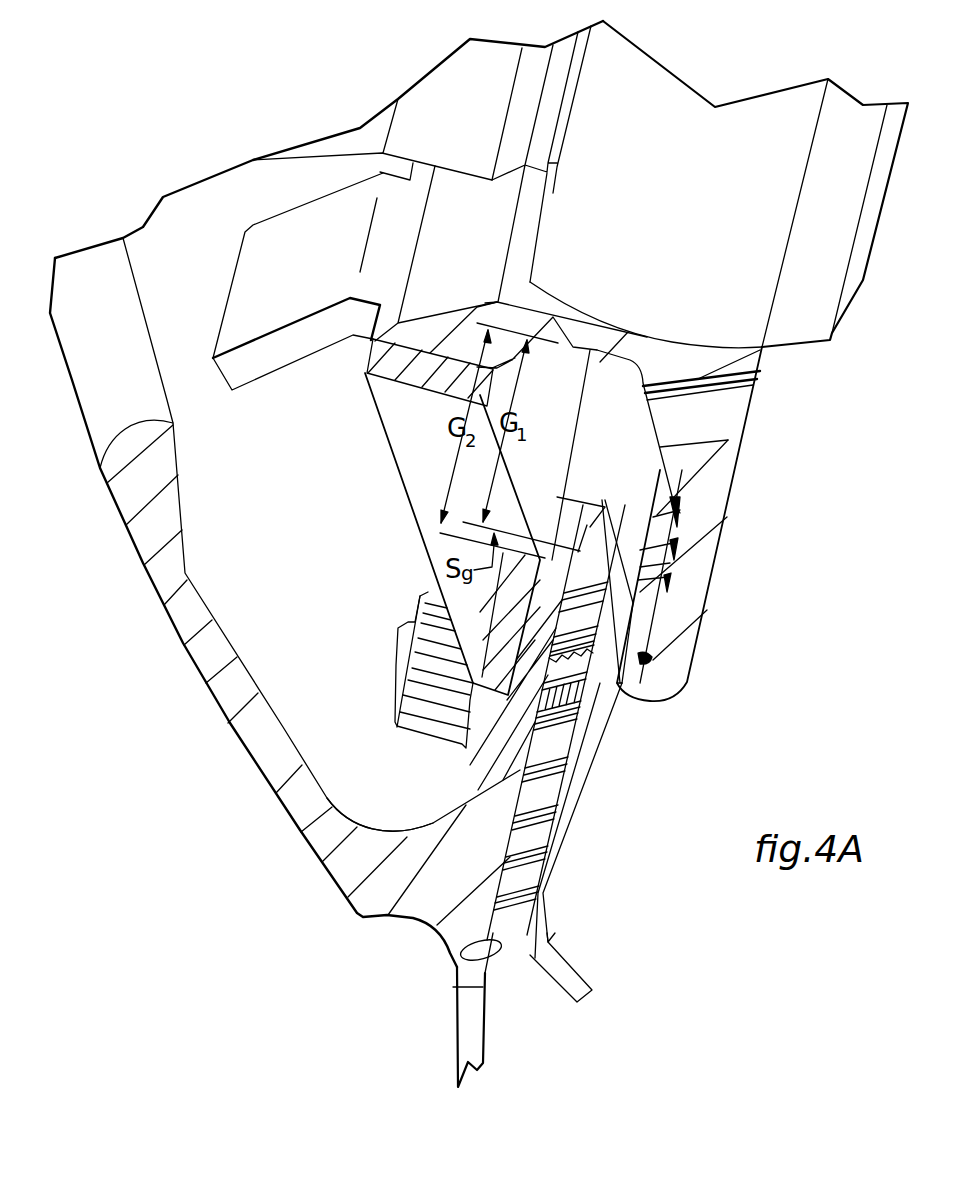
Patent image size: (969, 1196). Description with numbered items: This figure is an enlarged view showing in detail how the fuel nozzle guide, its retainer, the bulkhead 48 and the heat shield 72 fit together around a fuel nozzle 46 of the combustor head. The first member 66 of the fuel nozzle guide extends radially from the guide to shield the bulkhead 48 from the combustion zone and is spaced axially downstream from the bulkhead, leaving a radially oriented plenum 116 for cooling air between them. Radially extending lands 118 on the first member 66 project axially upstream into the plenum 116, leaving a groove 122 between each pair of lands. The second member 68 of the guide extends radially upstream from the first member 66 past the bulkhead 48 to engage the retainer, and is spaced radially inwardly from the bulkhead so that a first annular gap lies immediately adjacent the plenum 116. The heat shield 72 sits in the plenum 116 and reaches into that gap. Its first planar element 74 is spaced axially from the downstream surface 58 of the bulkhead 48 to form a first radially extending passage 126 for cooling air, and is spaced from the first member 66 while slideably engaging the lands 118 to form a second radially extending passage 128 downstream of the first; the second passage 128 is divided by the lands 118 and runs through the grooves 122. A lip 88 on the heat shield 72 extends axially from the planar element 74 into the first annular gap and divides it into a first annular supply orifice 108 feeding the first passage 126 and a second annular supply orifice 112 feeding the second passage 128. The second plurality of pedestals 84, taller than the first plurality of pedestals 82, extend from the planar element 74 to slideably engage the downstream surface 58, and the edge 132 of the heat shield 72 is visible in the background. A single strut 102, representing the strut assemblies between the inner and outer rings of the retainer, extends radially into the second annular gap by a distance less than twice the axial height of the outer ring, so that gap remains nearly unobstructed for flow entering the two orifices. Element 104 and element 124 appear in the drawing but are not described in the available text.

The fuel nozzle 46 is at (702, 153).
The bulkhead 48 is at (462, 823).
The downstream surface 58 is at (453, 967).
The first member 66 is at (683, 640).
The second member 68 is at (612, 340).
The heat shield 72 is at (582, 972).
The first planar element 74 is at (573, 790).
The first plurality of pedestals 82 is at (547, 820).
The second plurality of pedestals 84 is at (578, 745).
The lip 88 is at (640, 495).
The strut 102 is at (391, 447).
The housing 104 is at (245, 305).
The first annular supply orifice 108 is at (553, 530).
The second annular supply orifice 112 is at (618, 434).
The plenum 116 is at (623, 543).
The lands 118 is at (642, 712).
The groove 122 is at (650, 668).
The slab 124 is at (675, 412).
The first radially extending passage 126 is at (507, 917).
The second radially extending passage 128 is at (632, 686).
The edge 132 is at (517, 925).